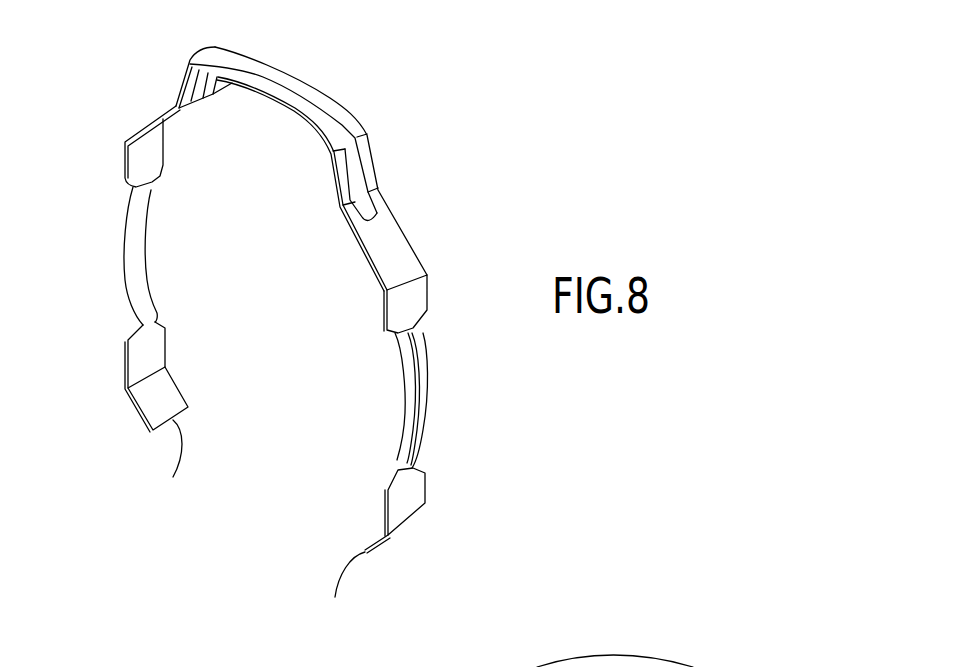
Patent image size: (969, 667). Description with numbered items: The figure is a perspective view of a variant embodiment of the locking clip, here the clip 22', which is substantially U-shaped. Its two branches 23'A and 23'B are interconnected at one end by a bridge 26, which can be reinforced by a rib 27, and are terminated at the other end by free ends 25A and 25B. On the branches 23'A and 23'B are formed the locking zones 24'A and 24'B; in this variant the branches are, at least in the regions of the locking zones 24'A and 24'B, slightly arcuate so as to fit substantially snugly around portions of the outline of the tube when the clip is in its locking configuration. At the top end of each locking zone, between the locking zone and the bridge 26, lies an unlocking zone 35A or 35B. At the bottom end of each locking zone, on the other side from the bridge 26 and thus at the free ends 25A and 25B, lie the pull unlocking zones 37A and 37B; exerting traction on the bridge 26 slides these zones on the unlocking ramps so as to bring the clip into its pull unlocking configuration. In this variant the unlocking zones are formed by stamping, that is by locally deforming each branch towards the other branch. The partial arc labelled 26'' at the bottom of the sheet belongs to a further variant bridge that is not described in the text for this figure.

The bridge 26 is at (301, 141).
The rib 27 is at (297, 97).
The clip 22' is at (399, 139).
The unlocking zone 35A is at (118, 126).
The unlocking zone 35B is at (441, 294).
The locking zone 24'A is at (194, 256).
The locking zone 24'B is at (358, 399).
The branch 23'A is at (84, 285).
The branch 23'B is at (487, 400).
The pull unlocking zone 37A is at (153, 397).
The pull unlocking zone 37B is at (380, 533).
The free end 25A is at (165, 468).
The free end 25B is at (341, 595).
The band of another embodiment 26'' is at (618, 641).